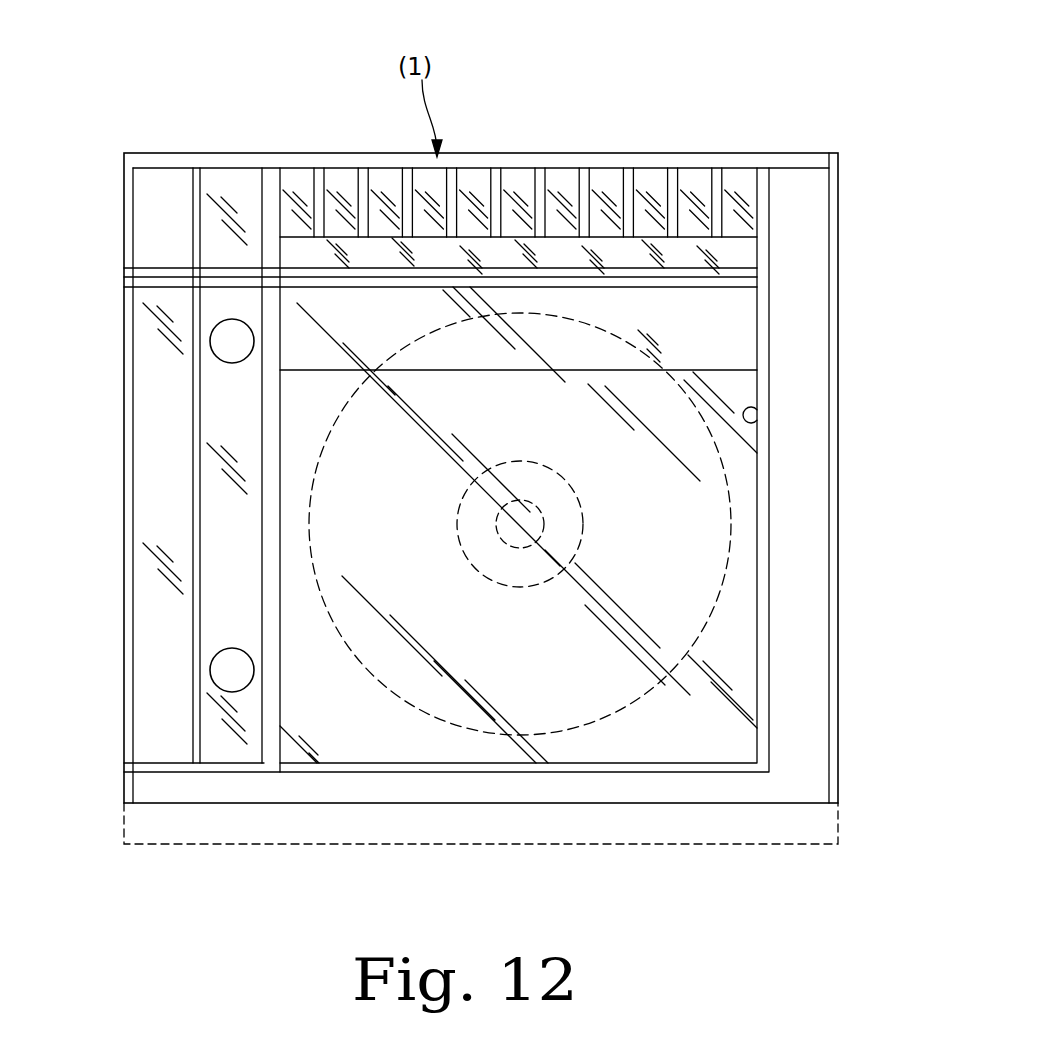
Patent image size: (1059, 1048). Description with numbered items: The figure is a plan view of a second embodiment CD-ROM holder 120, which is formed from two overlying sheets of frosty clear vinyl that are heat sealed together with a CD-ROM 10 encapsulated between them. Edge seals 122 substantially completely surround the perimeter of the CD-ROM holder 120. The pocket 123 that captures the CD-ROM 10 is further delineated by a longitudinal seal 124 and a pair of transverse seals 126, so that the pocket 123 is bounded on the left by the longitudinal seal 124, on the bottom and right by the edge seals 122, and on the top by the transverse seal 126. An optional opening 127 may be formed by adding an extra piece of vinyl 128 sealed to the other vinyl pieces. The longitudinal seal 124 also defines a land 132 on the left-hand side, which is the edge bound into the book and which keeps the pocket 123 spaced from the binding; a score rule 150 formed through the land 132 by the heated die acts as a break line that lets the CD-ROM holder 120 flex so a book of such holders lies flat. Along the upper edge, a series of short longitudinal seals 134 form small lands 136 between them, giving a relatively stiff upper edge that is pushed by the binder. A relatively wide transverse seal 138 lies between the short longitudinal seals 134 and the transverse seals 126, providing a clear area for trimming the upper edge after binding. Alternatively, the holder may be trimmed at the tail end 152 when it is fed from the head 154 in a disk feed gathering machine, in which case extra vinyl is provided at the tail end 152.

The CD-ROM 10 is at (700, 510).
The CD-ROM holder 120 is at (767, 60).
The edge seals 122 is at (236, 165).
The pocket 123 is at (757, 423).
The longitudinal seal 124 is at (270, 434).
The transverse seals 126 is at (753, 283).
The opening 127 is at (727, 370).
The extra piece of vinyl 128 is at (724, 314).
The land 132 is at (150, 647).
The short longitudinal seals 134 is at (320, 172).
The small lands 136 is at (300, 172).
The wide transverse seal 138 is at (745, 254).
The score rule 150 is at (197, 246).
The tail end 152 is at (230, 847).
The head 154 is at (152, 153).